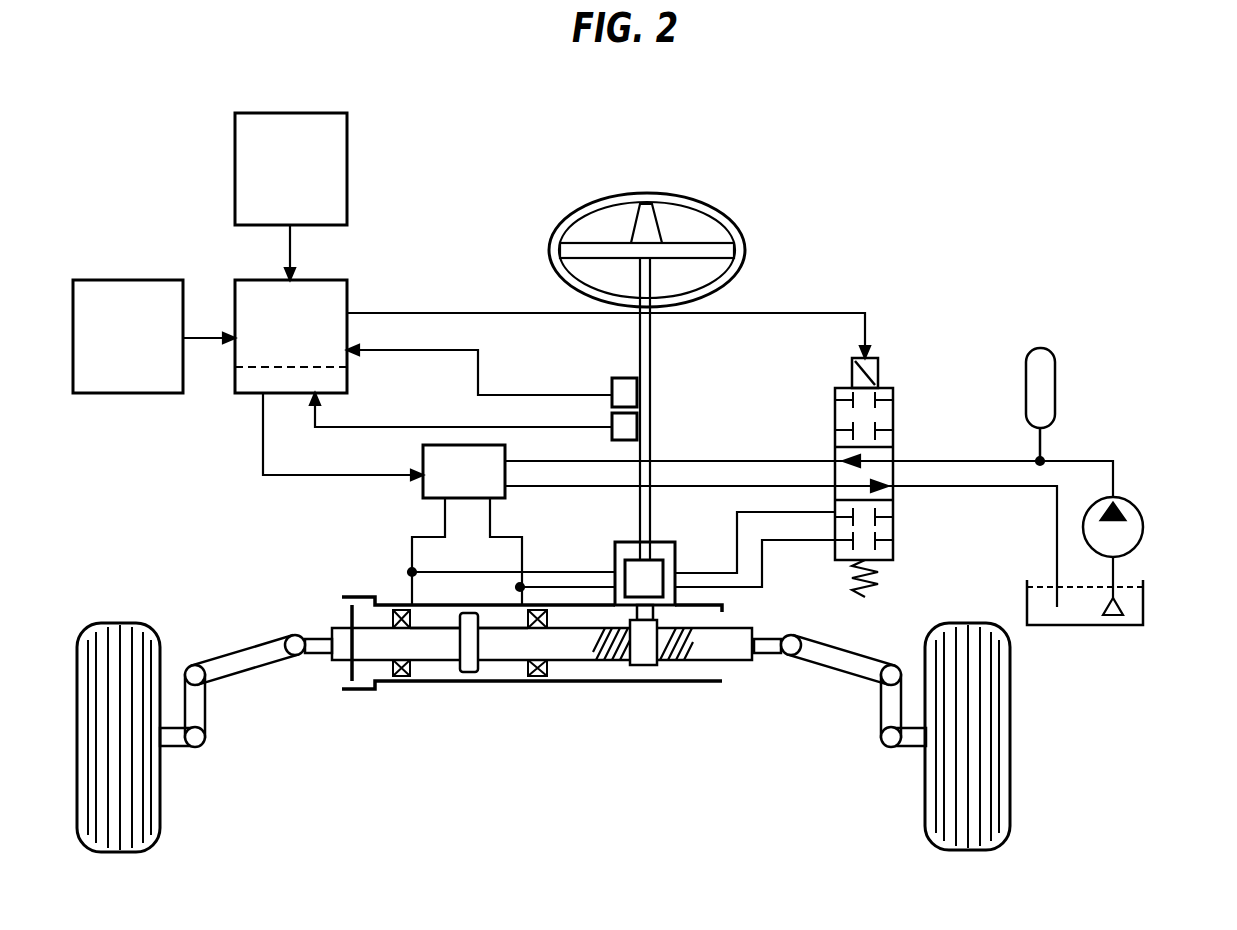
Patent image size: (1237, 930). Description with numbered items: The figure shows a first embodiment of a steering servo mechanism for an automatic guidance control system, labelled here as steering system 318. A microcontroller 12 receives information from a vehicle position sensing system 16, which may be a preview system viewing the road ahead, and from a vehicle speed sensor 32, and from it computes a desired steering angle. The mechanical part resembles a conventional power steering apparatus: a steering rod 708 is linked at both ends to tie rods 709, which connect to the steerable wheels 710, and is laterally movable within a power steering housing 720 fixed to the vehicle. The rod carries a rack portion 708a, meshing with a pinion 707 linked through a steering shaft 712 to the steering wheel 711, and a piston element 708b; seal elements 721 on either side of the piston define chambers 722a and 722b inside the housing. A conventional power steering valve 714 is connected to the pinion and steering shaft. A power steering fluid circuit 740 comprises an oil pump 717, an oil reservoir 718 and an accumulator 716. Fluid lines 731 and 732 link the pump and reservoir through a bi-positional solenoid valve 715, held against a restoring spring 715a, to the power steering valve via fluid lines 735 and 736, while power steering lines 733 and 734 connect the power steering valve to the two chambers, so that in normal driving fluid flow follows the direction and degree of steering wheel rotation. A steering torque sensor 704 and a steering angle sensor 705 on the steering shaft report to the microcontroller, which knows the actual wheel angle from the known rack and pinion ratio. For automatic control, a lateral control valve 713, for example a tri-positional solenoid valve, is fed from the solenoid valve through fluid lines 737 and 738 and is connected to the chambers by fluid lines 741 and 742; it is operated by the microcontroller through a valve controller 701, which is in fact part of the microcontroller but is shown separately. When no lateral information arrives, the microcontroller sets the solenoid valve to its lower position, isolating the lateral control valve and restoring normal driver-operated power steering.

The microcontroller 12 is at (291, 336).
The vehicle position sensing system 16 is at (291, 169).
The vehicle speed sensor 32 is at (128, 336).
The steering system 318 is at (497, 808).
The valve controller 701 is at (250, 381).
The steering torque sensor 704 is at (617, 378).
The steering angle sensor 705 is at (637, 428).
The pinion 707 is at (652, 665).
The steering rod 708 is at (582, 645).
The rack portion 708a is at (620, 660).
The piston element 708b is at (462, 665).
The tie rods 709 is at (244, 678).
The steerable wheels 710 is at (118, 623).
The steering wheel 711 is at (663, 194).
The steering shaft 712 is at (652, 346).
The lateral control valve 713 is at (423, 490).
The power steering valve 714 is at (652, 566).
The solenoid valve 715 is at (884, 388).
The restoring spring 715a is at (876, 586).
The accumulator 716 is at (1041, 348).
The oil pump 717 is at (1133, 547).
The oil reservoir 718 is at (1127, 627).
The power steering housing 720 is at (348, 690).
The seal elements 721 is at (392, 688).
The chamber 722a is at (412, 688).
The chamber 722b is at (500, 665).
The power steering fluid line 731 is at (918, 461).
The power steering fluid line 732 is at (916, 487).
The power steering line 733 is at (548, 572).
The power steering line 734 is at (588, 587).
The fluid line 735 is at (738, 522).
The fluid line 736 is at (766, 580).
The fluid line 737 is at (746, 461).
The fluid line 738 is at (772, 486).
The power steering fluid circuit 740 is at (1146, 497).
The fluid line 741 is at (412, 557).
The fluid line 742 is at (520, 556).